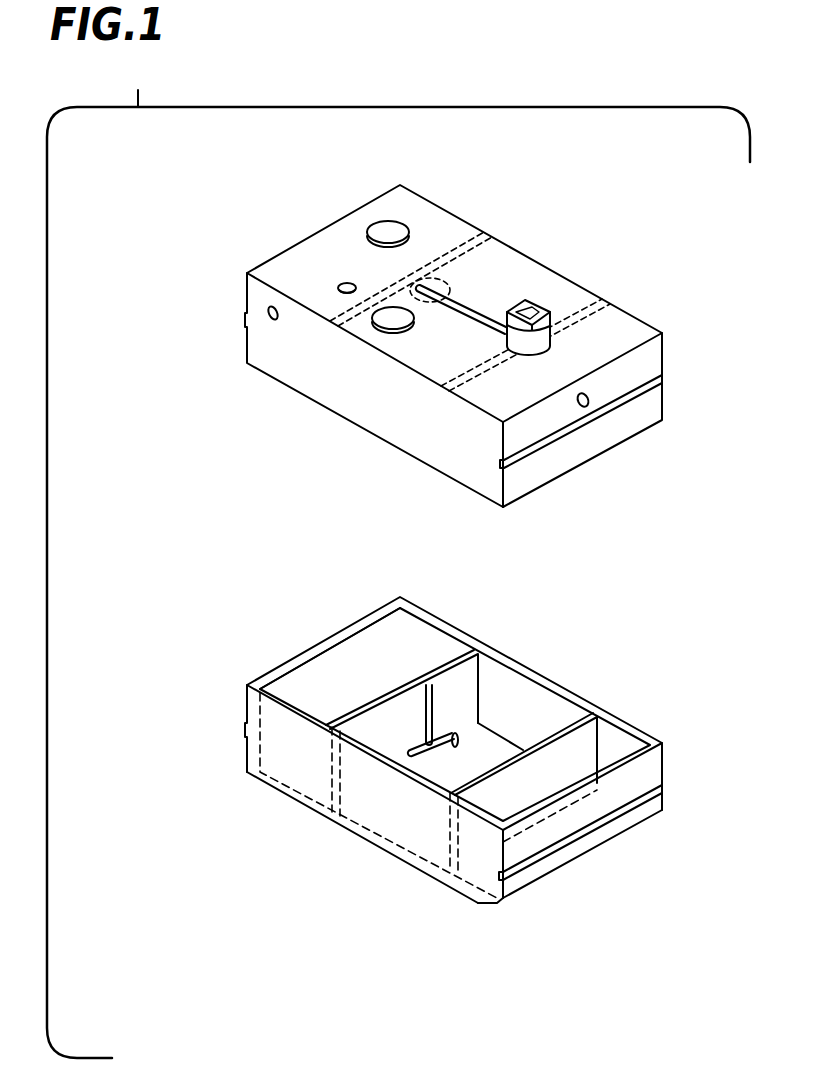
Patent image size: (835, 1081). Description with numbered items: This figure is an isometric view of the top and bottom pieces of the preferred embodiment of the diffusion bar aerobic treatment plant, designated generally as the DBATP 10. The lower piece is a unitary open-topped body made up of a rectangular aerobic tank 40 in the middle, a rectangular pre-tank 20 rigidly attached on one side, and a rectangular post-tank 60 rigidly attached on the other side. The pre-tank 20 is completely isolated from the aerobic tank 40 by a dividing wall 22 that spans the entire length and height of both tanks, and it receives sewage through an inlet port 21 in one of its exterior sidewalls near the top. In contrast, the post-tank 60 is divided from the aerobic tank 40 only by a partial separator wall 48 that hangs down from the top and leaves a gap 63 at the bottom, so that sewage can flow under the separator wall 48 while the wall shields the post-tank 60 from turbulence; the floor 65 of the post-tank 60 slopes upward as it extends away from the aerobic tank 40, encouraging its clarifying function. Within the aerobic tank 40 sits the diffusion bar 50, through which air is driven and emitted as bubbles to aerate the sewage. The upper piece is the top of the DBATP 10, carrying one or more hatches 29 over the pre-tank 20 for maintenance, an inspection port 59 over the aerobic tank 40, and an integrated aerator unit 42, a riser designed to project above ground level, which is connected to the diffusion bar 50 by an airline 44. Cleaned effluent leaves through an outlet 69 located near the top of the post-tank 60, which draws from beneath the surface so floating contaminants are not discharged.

The DBATP 10 is at (214, 794).
The pre-tank 20 is at (369, 681).
The inlet port 21 is at (266, 311).
The dividing wall 22 is at (452, 660).
The hatches 29 is at (405, 230).
The aerobic tank 40 is at (496, 761).
The aerator unit 42 is at (540, 303).
The airline 44 is at (462, 318).
The separator wall 48 is at (568, 725).
The diffusion bar 50 is at (450, 728).
The inspection port 59 is at (383, 338).
The post-tank 60 is at (557, 791).
The gap 63 is at (436, 879).
The floor 65 is at (492, 903).
The outlet 69 is at (590, 396).